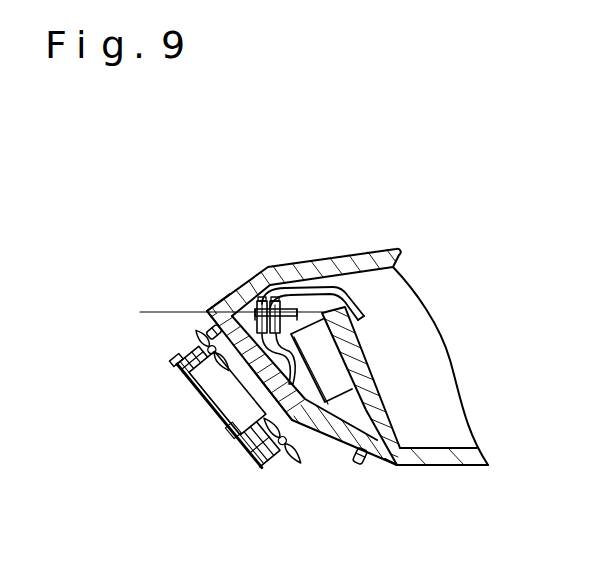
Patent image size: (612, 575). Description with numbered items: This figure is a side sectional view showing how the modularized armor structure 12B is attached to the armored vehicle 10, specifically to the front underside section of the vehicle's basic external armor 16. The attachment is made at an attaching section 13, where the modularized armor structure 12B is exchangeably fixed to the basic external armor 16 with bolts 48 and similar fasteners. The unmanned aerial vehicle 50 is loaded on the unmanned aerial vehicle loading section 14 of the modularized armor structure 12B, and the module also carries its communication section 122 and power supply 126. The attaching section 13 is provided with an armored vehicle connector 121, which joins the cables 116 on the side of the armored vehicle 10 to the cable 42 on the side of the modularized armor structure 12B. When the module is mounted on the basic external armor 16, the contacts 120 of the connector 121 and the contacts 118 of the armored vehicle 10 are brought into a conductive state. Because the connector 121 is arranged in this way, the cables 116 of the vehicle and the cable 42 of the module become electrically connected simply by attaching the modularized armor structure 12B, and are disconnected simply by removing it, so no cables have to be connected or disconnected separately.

The armored vehicle 10 is at (472, 254).
The basic external armor 16 is at (373, 253).
The modularized armor structure 12B is at (336, 428).
The unmanned aerial vehicle loading section 14 is at (277, 407).
The cable 42 is at (300, 349).
The power supply 126 is at (328, 377).
The communication section 122 is at (322, 401).
The armored vehicle connector 121 is at (140, 312).
The contacts 120 is at (206, 310).
The attaching section 13 is at (204, 308).
The bolts 48 is at (207, 331).
The contacts 118 is at (257, 304).
The cables 116 is at (318, 287).
The unmanned aerial vehicle 50 is at (242, 445).